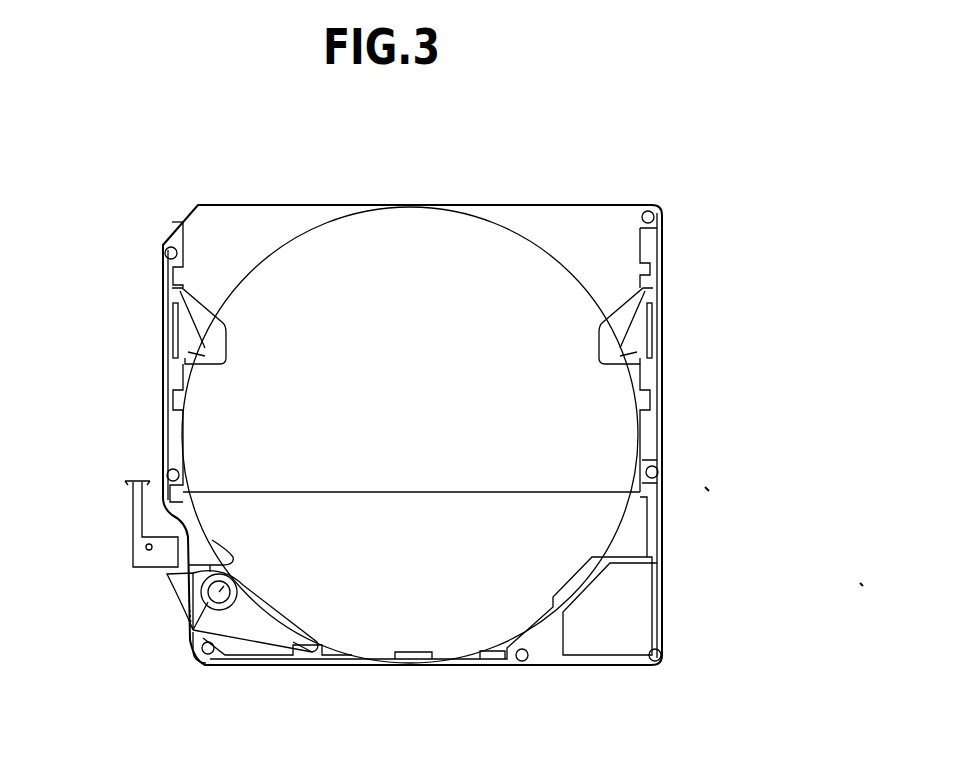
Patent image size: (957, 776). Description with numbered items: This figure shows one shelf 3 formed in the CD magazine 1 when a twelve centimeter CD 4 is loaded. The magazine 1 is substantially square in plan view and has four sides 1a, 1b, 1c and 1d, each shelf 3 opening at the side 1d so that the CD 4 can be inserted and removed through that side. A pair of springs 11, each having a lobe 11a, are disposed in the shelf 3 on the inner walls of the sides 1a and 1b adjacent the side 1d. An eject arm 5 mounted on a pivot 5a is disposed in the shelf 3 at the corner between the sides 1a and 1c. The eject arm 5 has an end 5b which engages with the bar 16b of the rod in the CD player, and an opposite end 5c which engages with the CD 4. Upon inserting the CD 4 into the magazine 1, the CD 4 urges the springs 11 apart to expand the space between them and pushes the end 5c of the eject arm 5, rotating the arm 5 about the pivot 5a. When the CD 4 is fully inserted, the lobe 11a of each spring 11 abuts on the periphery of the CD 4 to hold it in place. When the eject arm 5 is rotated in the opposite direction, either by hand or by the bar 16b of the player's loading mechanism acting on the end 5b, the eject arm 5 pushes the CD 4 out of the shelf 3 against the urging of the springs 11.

The CD magazine 1 is at (715, 195).
The side 1a is at (163, 262).
The side 1b is at (660, 283).
The side 1c is at (543, 667).
The side 1d is at (607, 205).
The shelf 3 is at (500, 218).
The 12 cm CD 4 is at (305, 218).
The eject arm 5 is at (242, 627).
The pivot 5a is at (192, 633).
The end of eject arm 5b is at (168, 585).
The opposite end of eject arm 5c is at (300, 640).
The spring 11 is at (183, 345).
The lobe 11a is at (190, 354).
The bar 16b is at (146, 549).